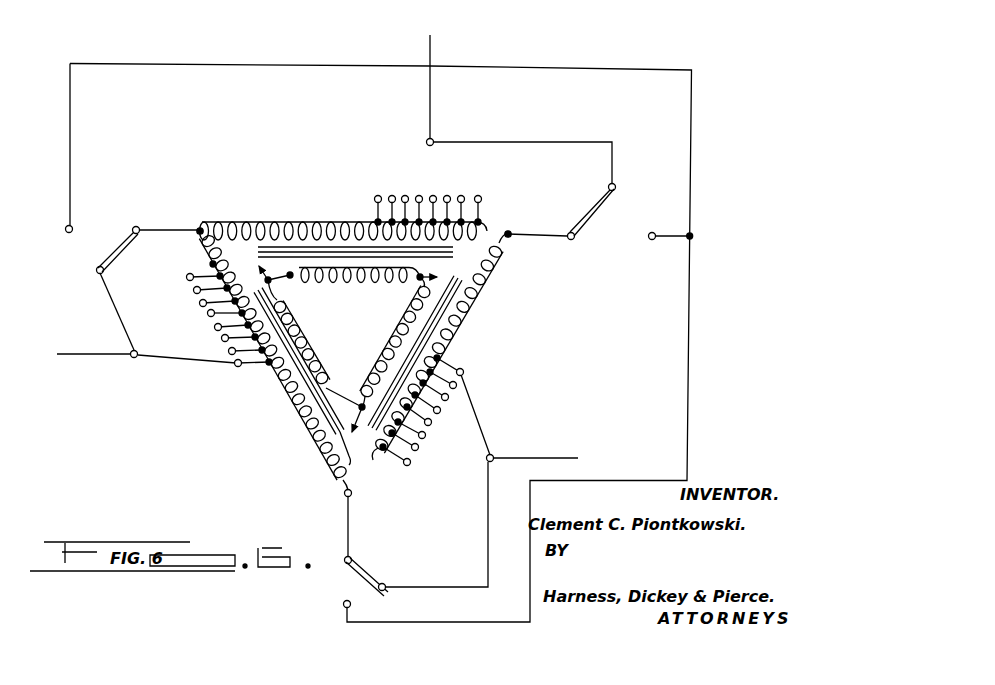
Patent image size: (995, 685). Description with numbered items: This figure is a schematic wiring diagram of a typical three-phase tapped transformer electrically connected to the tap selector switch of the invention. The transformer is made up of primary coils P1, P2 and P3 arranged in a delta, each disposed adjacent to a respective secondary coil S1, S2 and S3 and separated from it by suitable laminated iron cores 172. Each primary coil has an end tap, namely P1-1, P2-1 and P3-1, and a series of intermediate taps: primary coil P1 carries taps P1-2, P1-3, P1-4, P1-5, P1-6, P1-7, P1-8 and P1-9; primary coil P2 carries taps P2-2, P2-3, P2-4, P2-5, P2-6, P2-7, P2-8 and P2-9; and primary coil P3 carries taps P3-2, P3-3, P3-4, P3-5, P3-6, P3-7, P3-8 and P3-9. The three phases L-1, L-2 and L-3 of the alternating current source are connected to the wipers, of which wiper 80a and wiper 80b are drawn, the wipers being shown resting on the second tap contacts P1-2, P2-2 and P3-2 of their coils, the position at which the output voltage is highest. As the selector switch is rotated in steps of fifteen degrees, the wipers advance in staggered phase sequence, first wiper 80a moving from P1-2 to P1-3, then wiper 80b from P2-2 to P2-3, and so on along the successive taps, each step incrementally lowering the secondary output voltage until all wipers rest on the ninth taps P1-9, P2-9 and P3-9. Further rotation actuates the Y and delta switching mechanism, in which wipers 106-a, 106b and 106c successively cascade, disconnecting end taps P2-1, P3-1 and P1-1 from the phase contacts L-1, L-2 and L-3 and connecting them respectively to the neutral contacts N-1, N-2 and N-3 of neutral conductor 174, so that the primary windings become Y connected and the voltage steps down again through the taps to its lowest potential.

The neutral contact N-1 is at (76, 226).
The neutral contact N-2 is at (652, 240).
The neutral contact N-3 is at (343, 604).
The phase contact L-1 is at (95, 327).
The phase contact L-2 is at (433, 126).
The phase contact L-3 is at (493, 480).
The wiper 80a is at (140, 358).
The wiper 80b is at (428, 140).
The wiper 106-a is at (118, 250).
The wiper 106b is at (603, 208).
The wiper 106c is at (368, 572).
The primary coil P1 is at (295, 420).
The primary coil P2 is at (240, 226).
The primary coil P3 is at (483, 287).
The secondary coil S1 is at (305, 318).
The secondary coil S2 is at (331, 288).
The secondary coil S3 is at (392, 336).
The laminated iron cores 172 is at (370, 446).
The neutral conductor 174 is at (573, 483).
The end tap P1-1 is at (345, 558).
The tap contact P1-2 is at (238, 366).
The tap contact P1-3 is at (222, 339).
The tap contact P1-4 is at (215, 328).
The tap contact P1-5 is at (208, 314).
The tap contact P1-6 is at (200, 304).
The tap contact P1-7 is at (194, 292).
The tap contact P1-8 is at (188, 276).
The tap contact P1-9 is at (212, 263).
The end tap P2-1 is at (138, 227).
The tap contact P2-2 is at (378, 196).
The tap contact P2-3 is at (392, 196).
The tap contact P2-4 is at (405, 196).
The tap contact P2-5 is at (419, 196).
The tap contact P2-6 is at (433, 196).
The tap contact P2-7 is at (447, 196).
The tap contact P2-8 is at (461, 196).
The tap contact P2-9 is at (478, 196).
The end tap P3-1 is at (570, 233).
The tap contact P3-2 is at (463, 369).
The tap contact P3-3 is at (457, 385).
The tap contact P3-4 is at (449, 397).
The tap contact P3-5 is at (441, 410).
The tap contact P3-6 is at (432, 422).
The tap contact P3-7 is at (425, 436).
The tap contact P3-8 is at (418, 448).
The tap contact P3-9 is at (410, 464).